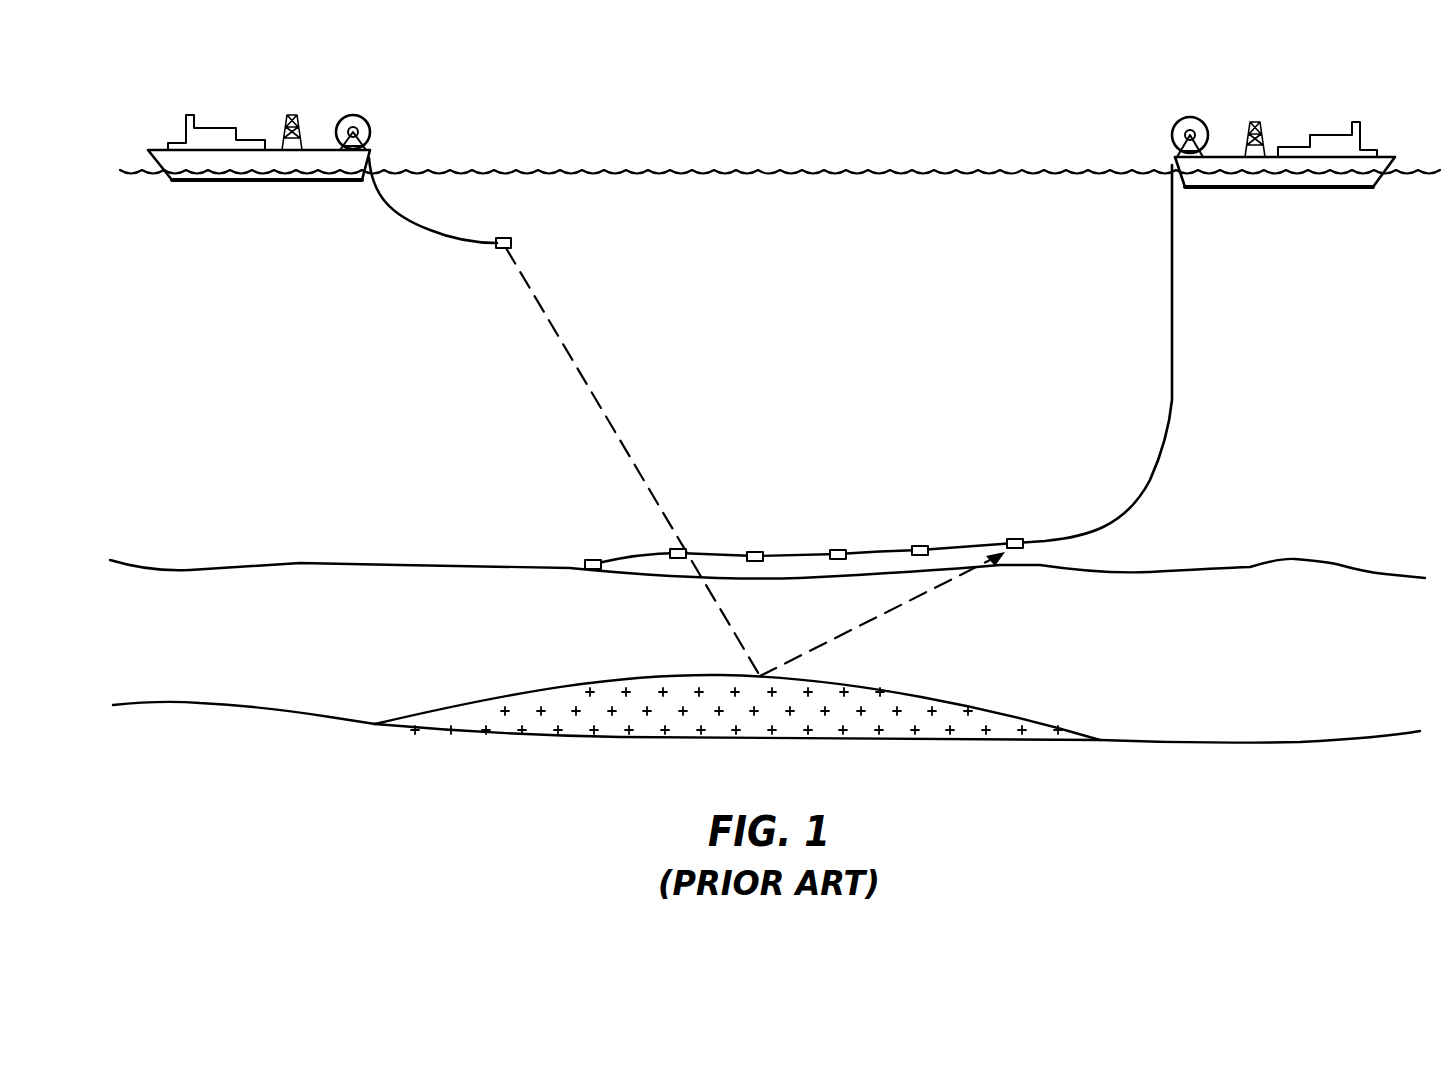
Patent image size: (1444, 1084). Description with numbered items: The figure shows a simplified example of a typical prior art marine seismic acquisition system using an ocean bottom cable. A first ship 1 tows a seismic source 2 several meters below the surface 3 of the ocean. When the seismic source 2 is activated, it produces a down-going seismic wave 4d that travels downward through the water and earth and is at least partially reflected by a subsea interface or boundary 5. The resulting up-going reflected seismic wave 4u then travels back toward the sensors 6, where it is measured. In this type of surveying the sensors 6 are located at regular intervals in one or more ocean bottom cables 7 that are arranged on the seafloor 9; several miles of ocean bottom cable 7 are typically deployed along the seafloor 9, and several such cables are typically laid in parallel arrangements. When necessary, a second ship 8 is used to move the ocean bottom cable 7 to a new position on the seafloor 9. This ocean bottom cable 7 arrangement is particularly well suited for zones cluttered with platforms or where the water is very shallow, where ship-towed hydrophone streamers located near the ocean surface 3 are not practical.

The first ship 1 is at (163, 150).
The seismic source 2 is at (509, 238).
The surface of the ocean 3 is at (762, 172).
The down-going seismic wave 4d is at (578, 360).
The up-going reflected seismic wave 4u is at (892, 606).
The subsea interface or boundary 5 is at (945, 702).
The sensors 6 is at (1013, 541).
The ocean bottom cable 7 is at (1174, 310).
The second ship 8 is at (1382, 160).
The seafloor 9 is at (290, 563).